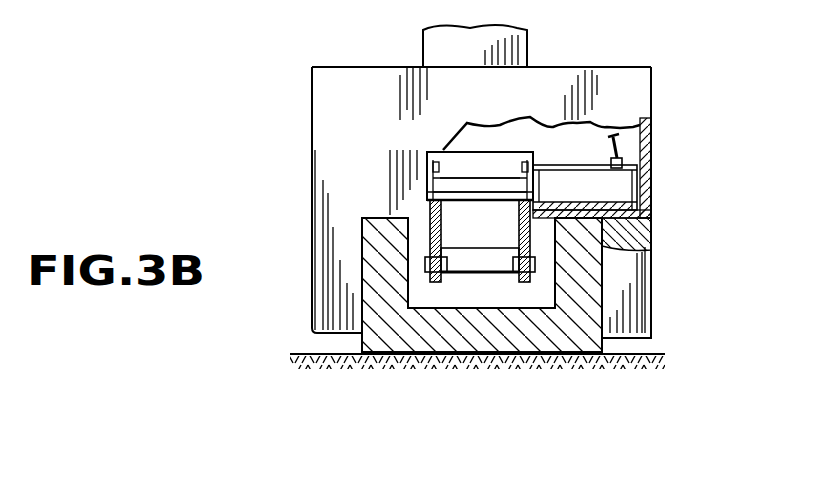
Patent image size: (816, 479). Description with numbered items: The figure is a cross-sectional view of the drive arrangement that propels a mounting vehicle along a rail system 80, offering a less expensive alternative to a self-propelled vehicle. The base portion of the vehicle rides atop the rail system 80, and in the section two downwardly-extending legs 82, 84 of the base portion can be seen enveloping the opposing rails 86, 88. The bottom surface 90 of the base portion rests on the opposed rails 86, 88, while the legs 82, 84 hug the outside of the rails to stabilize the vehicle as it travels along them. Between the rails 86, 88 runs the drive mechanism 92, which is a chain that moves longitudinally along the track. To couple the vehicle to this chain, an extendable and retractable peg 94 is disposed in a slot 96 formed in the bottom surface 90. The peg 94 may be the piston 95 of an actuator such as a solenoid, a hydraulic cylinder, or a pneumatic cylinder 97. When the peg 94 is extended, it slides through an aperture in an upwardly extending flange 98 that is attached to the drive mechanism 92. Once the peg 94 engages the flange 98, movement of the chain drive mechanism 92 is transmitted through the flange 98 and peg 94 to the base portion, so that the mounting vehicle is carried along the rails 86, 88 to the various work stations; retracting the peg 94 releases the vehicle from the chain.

The rail system 80 is at (530, 353).
The downwardly-extending leg 82 is at (362, 283).
The downwardly-extending leg 84 is at (638, 308).
The rail 86 is at (427, 237).
The rail 88 is at (585, 279).
The bottom surface 90 is at (360, 230).
The drive mechanism 92 is at (483, 278).
The extendable and retractable peg 94 is at (512, 176).
The piston 95 is at (495, 178).
The slot 96 is at (443, 150).
The pneumatic cylinder 97 is at (622, 188).
The upwardly extending flange 98 is at (428, 235).